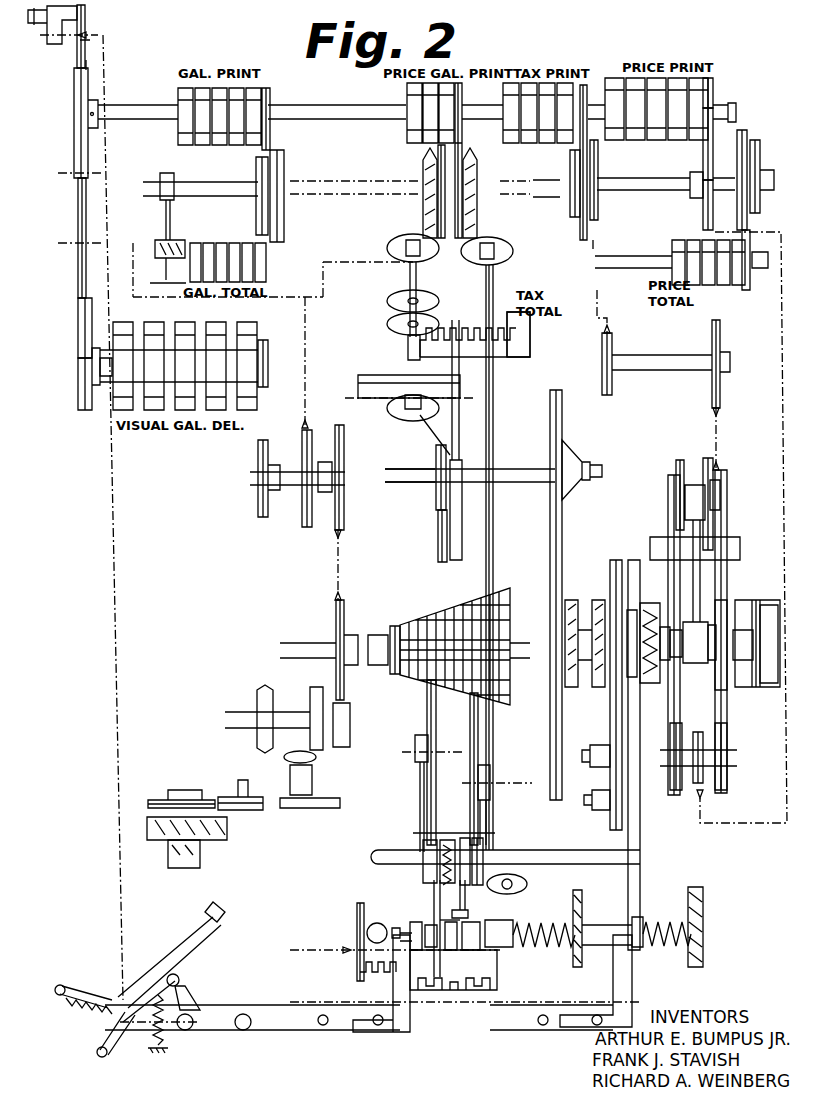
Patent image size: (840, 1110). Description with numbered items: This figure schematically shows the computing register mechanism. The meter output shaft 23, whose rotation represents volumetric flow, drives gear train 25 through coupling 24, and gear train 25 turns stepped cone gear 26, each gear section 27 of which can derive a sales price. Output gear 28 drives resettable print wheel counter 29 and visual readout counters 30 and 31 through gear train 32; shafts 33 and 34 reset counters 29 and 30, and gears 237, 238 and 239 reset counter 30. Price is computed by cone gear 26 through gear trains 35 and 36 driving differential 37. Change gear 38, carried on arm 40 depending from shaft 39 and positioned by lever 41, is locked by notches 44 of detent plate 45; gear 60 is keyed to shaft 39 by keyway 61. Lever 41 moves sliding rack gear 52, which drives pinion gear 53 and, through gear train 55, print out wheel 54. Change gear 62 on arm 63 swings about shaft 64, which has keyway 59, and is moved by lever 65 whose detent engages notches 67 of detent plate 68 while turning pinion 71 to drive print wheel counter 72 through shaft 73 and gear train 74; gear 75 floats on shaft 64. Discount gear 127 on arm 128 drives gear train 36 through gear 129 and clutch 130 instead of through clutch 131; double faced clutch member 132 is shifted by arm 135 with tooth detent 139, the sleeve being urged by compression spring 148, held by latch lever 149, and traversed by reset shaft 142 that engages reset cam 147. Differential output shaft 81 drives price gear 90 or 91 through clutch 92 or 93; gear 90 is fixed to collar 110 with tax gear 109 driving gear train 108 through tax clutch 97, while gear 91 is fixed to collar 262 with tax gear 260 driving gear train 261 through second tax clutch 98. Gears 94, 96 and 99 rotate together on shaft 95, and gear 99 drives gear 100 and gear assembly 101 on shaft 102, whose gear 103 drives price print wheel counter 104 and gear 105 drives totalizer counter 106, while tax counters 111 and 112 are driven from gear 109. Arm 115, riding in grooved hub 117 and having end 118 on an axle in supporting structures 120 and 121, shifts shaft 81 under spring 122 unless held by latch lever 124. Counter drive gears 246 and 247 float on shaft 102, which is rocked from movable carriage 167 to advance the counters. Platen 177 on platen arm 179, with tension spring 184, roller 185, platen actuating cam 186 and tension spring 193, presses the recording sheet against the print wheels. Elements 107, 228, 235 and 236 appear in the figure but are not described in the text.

The output shaft 23 is at (203, 853).
The coupling 24 is at (223, 825).
The gear train 25 is at (215, 797).
The stepped cone gear 26 is at (390, 625).
The gear section 27 is at (435, 605).
The output gear 28 is at (334, 613).
The print wheel counter 29 is at (178, 90).
The visual readout counter 30 is at (253, 333).
The visual readout counter 31 is at (217, 243).
The gear train 32 is at (297, 522).
The shaft 33 is at (306, 105).
The shaft 34 is at (110, 357).
The gear train 35 is at (560, 447).
The gear train 36 is at (585, 760).
The differential 37 is at (585, 598).
The change gear 38 is at (438, 525).
The shaft 39 is at (520, 468).
The arm 40 is at (457, 526).
The lever 41 is at (476, 418).
The notches 44 is at (448, 326).
The detent plate 45 is at (528, 328).
The sliding rack gear 52 is at (358, 380).
The pinion gear 53 is at (405, 412).
The price per gallon print out wheel 54 is at (421, 123).
The gear train 55 is at (387, 296).
The keyway 59 is at (412, 860).
The gear 60 is at (435, 490).
The keyway 61 is at (413, 472).
The change gear 62 is at (471, 720).
The arm 63 is at (468, 840).
The shaft 64 is at (588, 834).
The lever 65 is at (434, 892).
The notches 67 is at (450, 1005).
The tenth of a cent detent plate 68 is at (497, 970).
The pinion 71 is at (527, 885).
The print wheel counter 72 is at (460, 115).
The shaft 73 is at (494, 412).
The gear train 74 is at (476, 220).
The gear 75 is at (480, 840).
The shaft 81 is at (551, 624).
The price gear 90 is at (672, 690).
The price gear 91 is at (725, 692).
The clutch 92 is at (635, 610).
The clutch 93 is at (755, 600).
The gear 94 is at (670, 780).
The shaft 95 is at (672, 747).
The gear 96 is at (728, 745).
The tax clutch 97 is at (645, 675).
The second tax clutch 98 is at (740, 677).
The gear 99 is at (698, 785).
The gear 100 is at (762, 168).
The gear assembly 101 is at (715, 151).
The shaft 102 is at (652, 178).
The gear 103 is at (705, 225).
The print wheel counter 104 is at (711, 80).
The gear 105 is at (747, 136).
The visual readout counter 106 is at (678, 269).
The shaft 107 is at (622, 257).
The gear train 108 is at (665, 480).
The tax gear 109 is at (665, 662).
The collar 110 is at (659, 675).
The tax counter 111 is at (583, 85).
The tax counter 112 is at (593, 295).
The arm 115 is at (637, 850).
The grooved hub 117 is at (618, 563).
The opposite end of arm 118 is at (640, 947).
The supporting structure 120 is at (703, 903).
The supporting structure 121 is at (582, 952).
The spring 122 is at (667, 914).
The latch lever 124 is at (633, 975).
The discount gear 127 is at (425, 700).
The arm 128 is at (416, 782).
The gear 129 is at (422, 835).
The clutch 130 is at (442, 840).
The clutch 131 is at (477, 772).
The double faced movable clutch member 132 is at (474, 899).
The arm 135 is at (450, 915).
The tooth detent 139 is at (471, 913).
The reset shaft 142 is at (592, 923).
The reset cam 147 is at (85, 13).
The compression spring 148 is at (550, 950).
The latch lever 149 is at (393, 988).
The movable carriage 167 is at (290, 1002).
The platen 177 is at (218, 917).
The platen arm 179 is at (172, 958).
The tension spring 184 is at (85, 1028).
The roller 185 is at (178, 978).
The platen actuating cam 186 is at (190, 1000).
The tension spring 193 is at (150, 1051).
The shaft 228 is at (86, 34).
The crank arm 235 is at (64, 40).
The gear 236 is at (75, 101).
The gear 237 is at (78, 207).
The gear 238 is at (78, 311).
The gear 239 is at (80, 350).
The counter drive gear 246 is at (572, 146).
The counter drive gear 247 is at (257, 146).
The tax gear 260 is at (775, 660).
The gear train 261 is at (728, 502).
The collar 262 is at (752, 632).